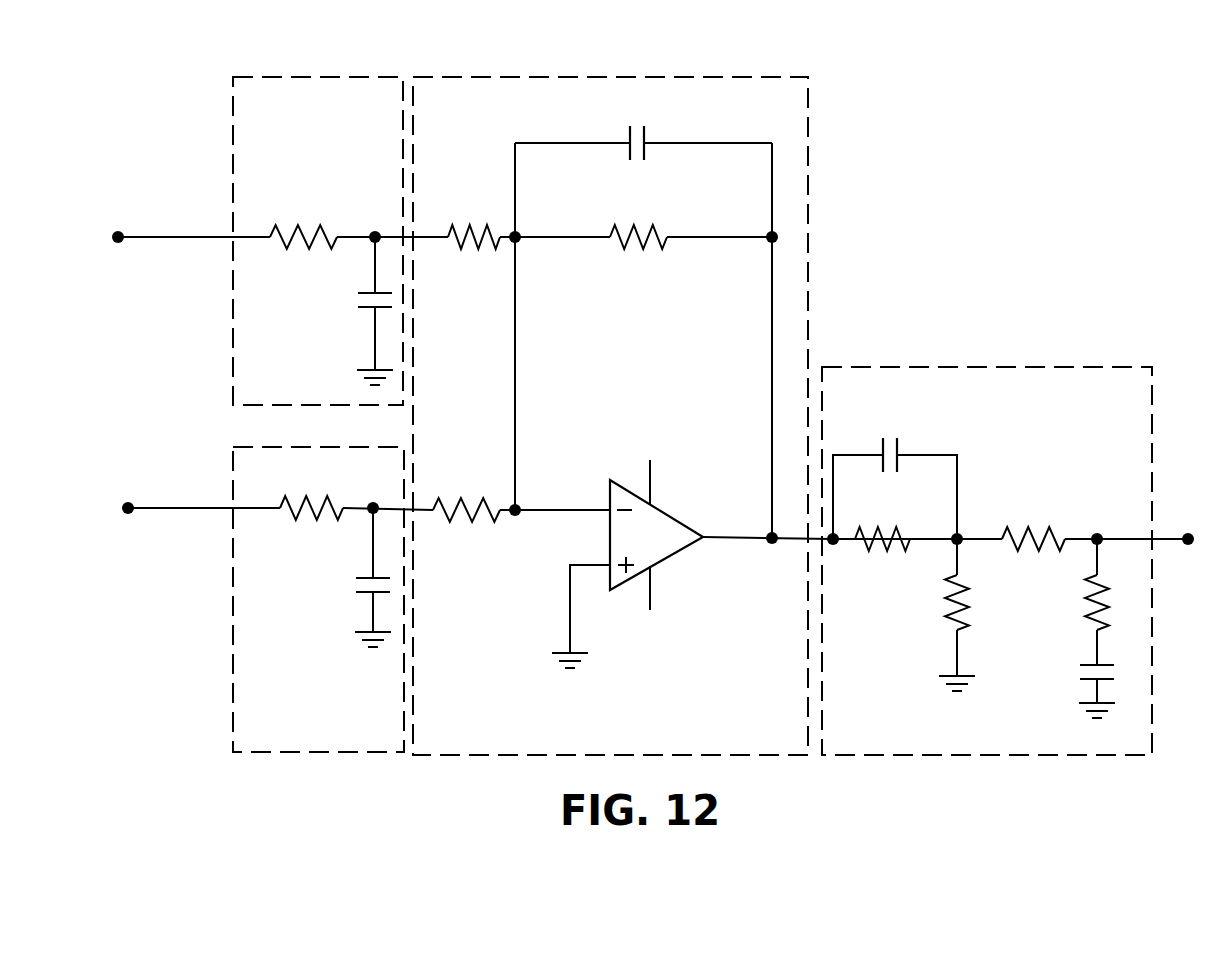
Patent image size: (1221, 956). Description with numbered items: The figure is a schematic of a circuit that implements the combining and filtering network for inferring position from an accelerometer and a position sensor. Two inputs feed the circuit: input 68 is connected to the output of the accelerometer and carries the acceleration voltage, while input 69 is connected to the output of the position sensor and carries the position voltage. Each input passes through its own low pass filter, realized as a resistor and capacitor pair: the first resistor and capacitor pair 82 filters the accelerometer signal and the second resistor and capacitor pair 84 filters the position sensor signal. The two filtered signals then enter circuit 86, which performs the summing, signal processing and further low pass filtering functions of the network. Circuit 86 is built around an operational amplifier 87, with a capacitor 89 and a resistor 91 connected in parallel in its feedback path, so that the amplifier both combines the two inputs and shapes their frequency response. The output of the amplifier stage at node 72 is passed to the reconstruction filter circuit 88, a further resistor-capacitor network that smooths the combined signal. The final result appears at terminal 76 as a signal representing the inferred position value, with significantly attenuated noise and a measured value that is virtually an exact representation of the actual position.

The input 68 is at (116, 242).
The input 69 is at (126, 512).
The amplifier output 72 is at (768, 558).
The terminal 76 is at (1188, 532).
The first resistor and capacitor pair 82 is at (347, 74).
The second resistor and capacitor pair 84 is at (232, 625).
The circuit 86 is at (623, 394).
The operational amplifier 87 is at (667, 518).
The output filter network 88 is at (853, 367).
The capacitor 89 is at (645, 143).
The resistor 91 is at (663, 231).